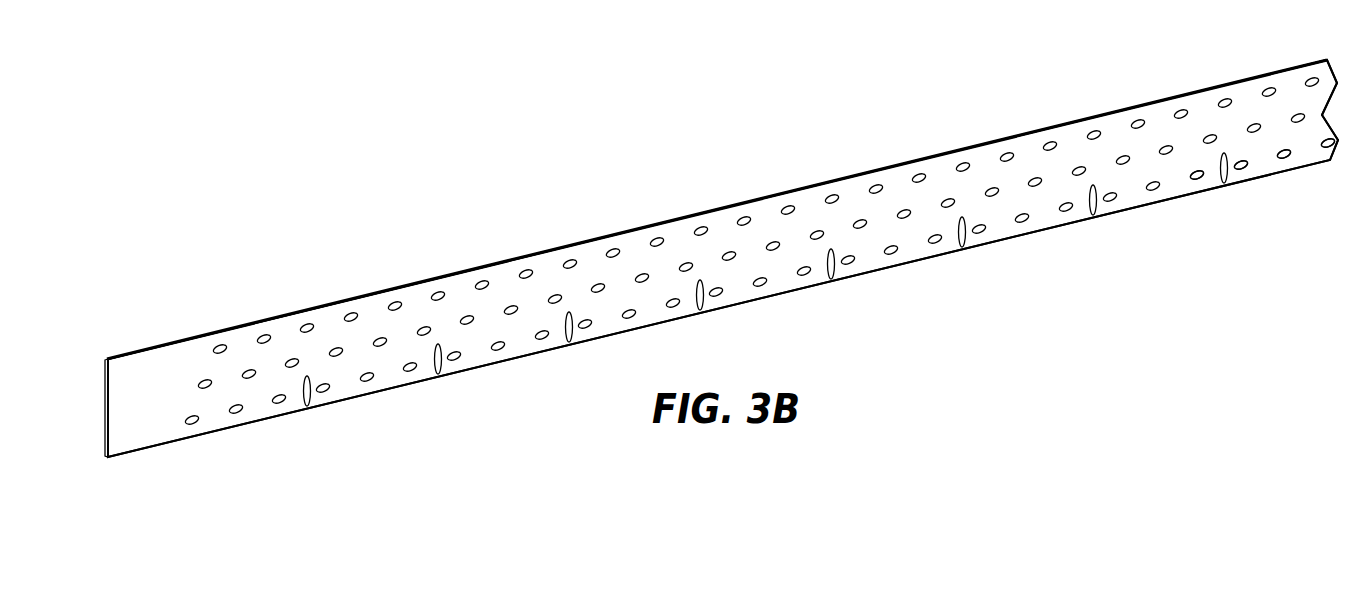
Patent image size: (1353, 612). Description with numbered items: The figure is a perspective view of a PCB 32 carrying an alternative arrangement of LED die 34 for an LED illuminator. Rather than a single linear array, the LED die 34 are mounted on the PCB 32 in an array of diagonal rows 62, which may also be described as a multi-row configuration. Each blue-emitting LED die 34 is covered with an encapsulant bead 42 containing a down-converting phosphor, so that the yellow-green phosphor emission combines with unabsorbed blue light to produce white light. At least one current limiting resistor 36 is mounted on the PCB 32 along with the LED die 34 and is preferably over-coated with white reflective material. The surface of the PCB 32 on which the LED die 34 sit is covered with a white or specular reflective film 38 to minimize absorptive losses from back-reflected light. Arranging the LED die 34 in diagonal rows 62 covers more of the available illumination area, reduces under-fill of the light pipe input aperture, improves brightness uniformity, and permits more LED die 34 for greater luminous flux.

The PCB 32 is at (107, 358).
The white or specular reflective film 38 is at (145, 433).
The current limiting resistor 36 is at (833, 280).
The diagonal rows 62 is at (568, 260).
The LED die 34 is at (1241, 169).
The encapsulant bead 42 is at (1330, 147).